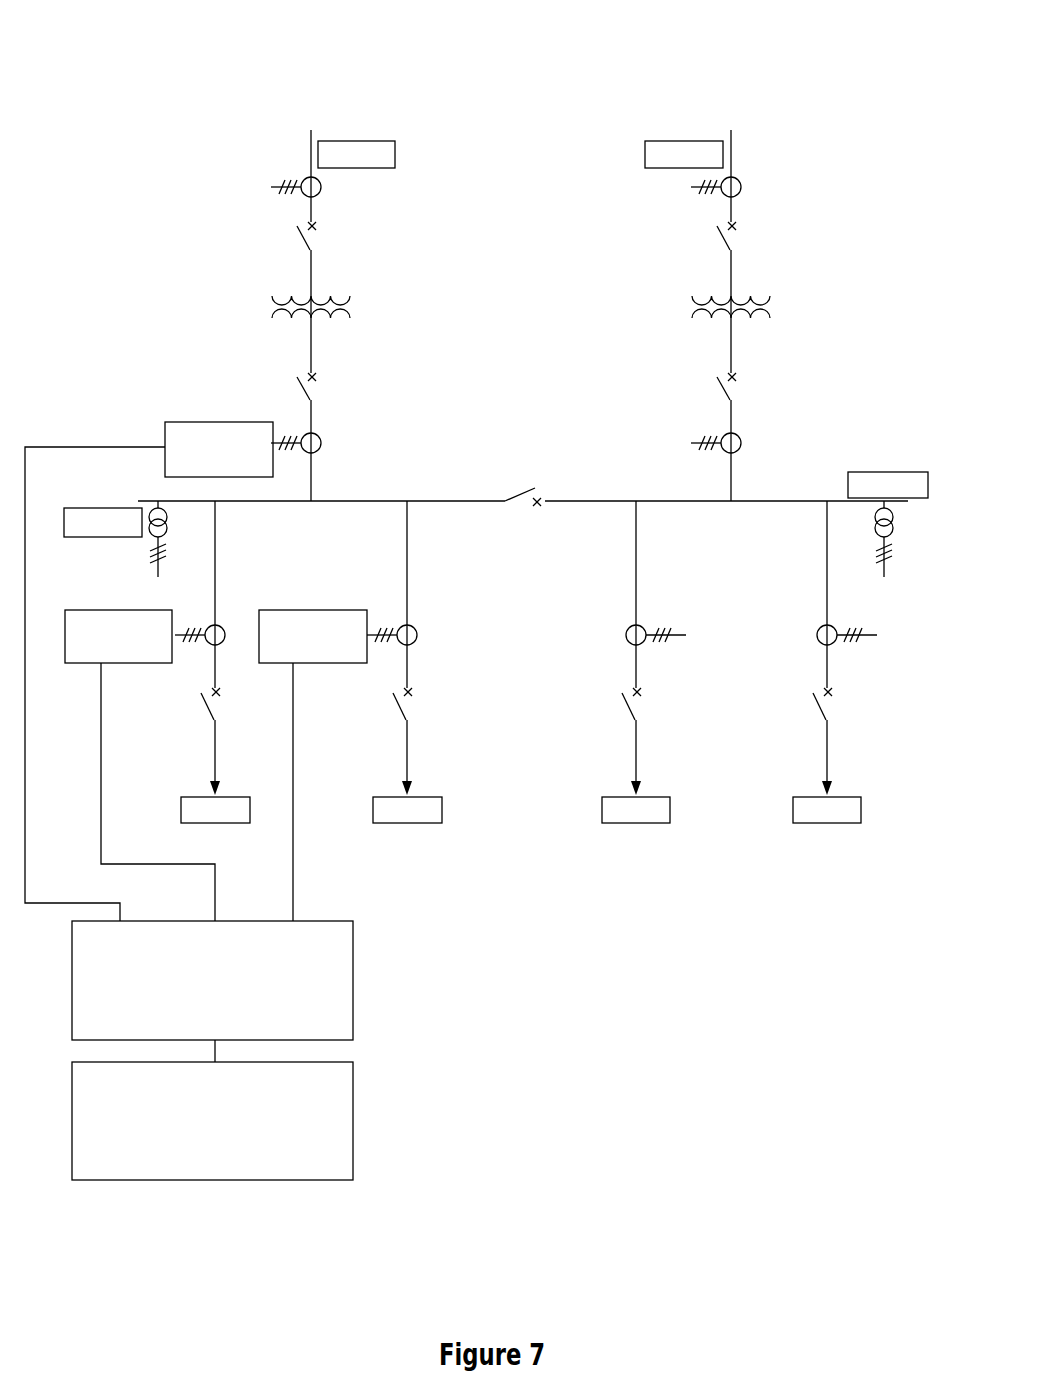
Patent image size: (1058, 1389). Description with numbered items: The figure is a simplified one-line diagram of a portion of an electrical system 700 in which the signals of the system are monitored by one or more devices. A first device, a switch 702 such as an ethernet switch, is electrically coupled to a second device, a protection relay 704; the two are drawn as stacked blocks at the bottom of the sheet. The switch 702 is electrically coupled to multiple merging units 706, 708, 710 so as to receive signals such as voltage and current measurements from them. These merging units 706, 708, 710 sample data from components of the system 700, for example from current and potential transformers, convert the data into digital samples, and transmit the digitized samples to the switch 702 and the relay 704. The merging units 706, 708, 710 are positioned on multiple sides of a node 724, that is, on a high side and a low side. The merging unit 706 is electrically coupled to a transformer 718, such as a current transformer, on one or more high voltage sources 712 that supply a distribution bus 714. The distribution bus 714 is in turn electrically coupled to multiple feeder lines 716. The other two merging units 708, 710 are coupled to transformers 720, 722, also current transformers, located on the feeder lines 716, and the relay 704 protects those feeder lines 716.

The electrical system 700 is at (104, 58).
The switch 702 is at (212, 980).
The protection relay 704 is at (212, 1121).
The merging unit 706 is at (196, 421).
The merging unit 708 is at (95, 609).
The merging unit 710 is at (310, 609).
The high voltage source 712 is at (312, 129).
The distribution bus 714 is at (370, 498).
The feeder line 716 is at (251, 822).
The transformer 718 is at (319, 436).
The transformer 720 is at (224, 628).
The transformer 722 is at (415, 628).
The node 724 is at (318, 504).